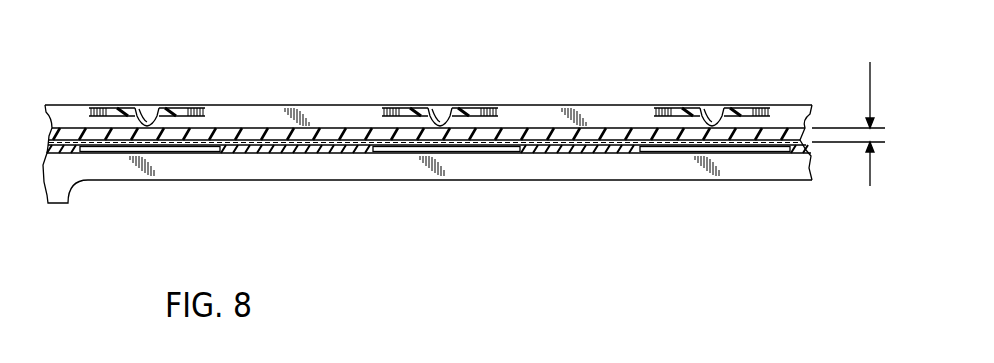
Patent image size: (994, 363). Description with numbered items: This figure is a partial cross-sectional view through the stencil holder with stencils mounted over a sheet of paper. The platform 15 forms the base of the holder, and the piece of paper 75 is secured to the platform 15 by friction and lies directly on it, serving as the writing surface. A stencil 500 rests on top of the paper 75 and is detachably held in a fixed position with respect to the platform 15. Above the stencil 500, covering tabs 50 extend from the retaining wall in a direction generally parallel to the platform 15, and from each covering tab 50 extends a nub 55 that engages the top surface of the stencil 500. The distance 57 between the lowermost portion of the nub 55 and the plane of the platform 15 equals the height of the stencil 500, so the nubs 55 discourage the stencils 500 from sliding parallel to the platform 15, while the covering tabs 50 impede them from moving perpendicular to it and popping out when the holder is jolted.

The platform 15 is at (347, 148).
The covering tab 50 is at (172, 114).
The nub 55 is at (147, 108).
The distance 57 is at (870, 62).
The piece of paper 75 is at (463, 148).
The stencil 500 is at (670, 140).